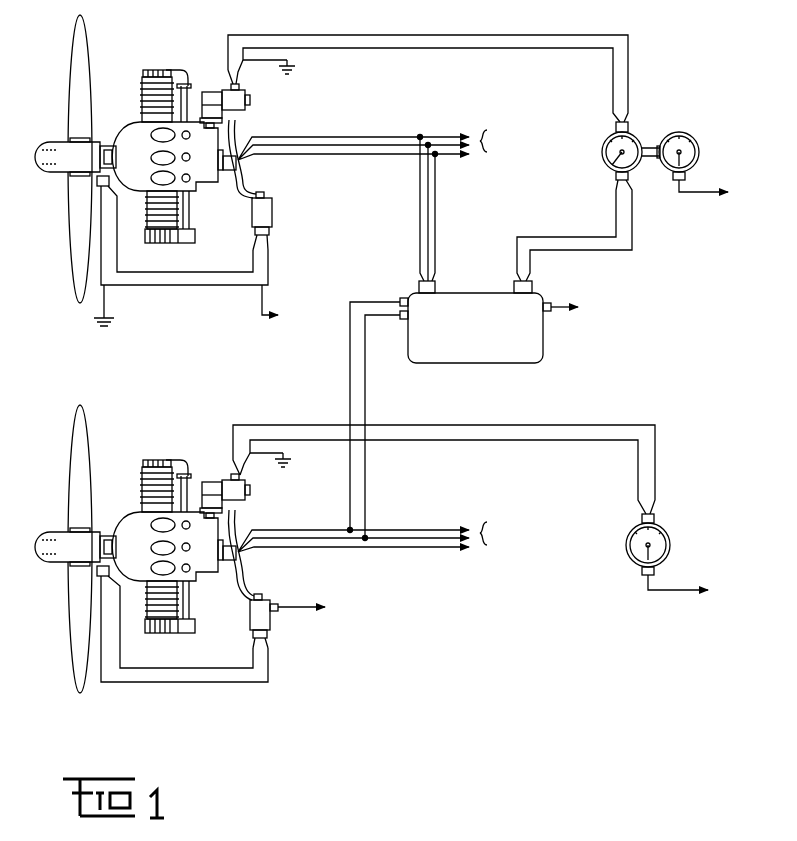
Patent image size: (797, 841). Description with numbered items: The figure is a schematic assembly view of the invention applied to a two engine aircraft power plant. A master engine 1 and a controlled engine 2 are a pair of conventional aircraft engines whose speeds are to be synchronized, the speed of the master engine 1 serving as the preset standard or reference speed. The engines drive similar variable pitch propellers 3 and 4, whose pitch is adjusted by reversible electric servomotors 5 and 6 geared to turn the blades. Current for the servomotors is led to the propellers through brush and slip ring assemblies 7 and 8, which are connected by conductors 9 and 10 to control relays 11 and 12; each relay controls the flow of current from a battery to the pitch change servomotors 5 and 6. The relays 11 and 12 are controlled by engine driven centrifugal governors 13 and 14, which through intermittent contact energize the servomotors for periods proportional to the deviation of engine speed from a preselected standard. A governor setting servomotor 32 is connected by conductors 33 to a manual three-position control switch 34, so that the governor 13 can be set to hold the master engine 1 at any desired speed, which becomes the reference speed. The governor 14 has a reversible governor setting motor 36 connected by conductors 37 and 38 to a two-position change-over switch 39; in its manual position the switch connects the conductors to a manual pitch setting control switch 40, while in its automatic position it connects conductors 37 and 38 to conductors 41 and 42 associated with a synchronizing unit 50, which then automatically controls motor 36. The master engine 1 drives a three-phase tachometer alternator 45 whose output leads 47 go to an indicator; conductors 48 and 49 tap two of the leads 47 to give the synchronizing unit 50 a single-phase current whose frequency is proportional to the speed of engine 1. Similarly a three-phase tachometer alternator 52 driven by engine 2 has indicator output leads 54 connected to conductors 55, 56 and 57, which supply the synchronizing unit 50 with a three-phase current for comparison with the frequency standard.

The master engine 1 is at (131, 511).
The controlled engine 2 is at (131, 121).
The variable pitch propeller 3 is at (73, 475).
The variable pitch propeller 4 is at (73, 88).
The reversible electric servomotor 5 is at (48, 530).
The reversible electric servomotor 6 is at (48, 143).
The brush and slip ring assembly 7 is at (106, 535).
The brush and slip ring assembly 8 is at (106, 145).
The conductor 9 is at (212, 682).
The conductor 10 is at (208, 285).
The control relay 11 is at (272, 628).
The control relay 12 is at (272, 220).
The engine driven centrifugal governor 13 is at (212, 476).
The engine driven centrifugal governor 14 is at (212, 86).
The governor setting servomotor 32 is at (240, 500).
The conductors 33 is at (519, 440).
The manual three-position control switch 34 is at (663, 532).
The reversible electric governor setting motor 36 is at (236, 110).
The conductor 37 is at (442, 48).
The conductor 38 is at (439, 36).
The two-position change-over switch 39 is at (628, 135).
The manual pitch setting control switch 40 is at (688, 134).
The conductor 41 is at (616, 210).
The conductor 42 is at (633, 225).
The three-phase tachometer alternator 45 is at (240, 560).
The output leads 47 is at (428, 545).
The conductor 48 is at (350, 380).
The conductor 49 is at (365, 403).
The synchronizing unit 50 is at (457, 368).
The three-phase tachometer alternator 52 is at (240, 168).
The indicator output leads 54 is at (383, 147).
The conductor 55 is at (420, 211).
The conductor 56 is at (436, 196).
The conductor 57 is at (437, 214).